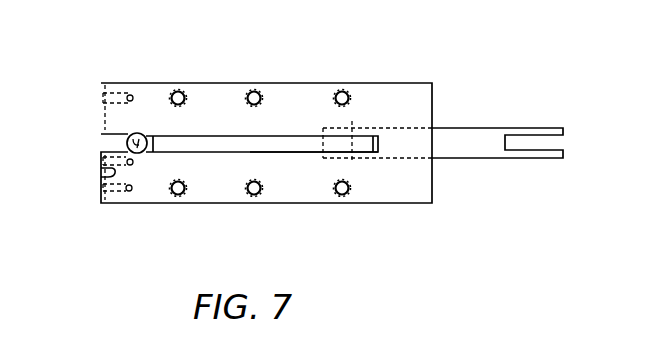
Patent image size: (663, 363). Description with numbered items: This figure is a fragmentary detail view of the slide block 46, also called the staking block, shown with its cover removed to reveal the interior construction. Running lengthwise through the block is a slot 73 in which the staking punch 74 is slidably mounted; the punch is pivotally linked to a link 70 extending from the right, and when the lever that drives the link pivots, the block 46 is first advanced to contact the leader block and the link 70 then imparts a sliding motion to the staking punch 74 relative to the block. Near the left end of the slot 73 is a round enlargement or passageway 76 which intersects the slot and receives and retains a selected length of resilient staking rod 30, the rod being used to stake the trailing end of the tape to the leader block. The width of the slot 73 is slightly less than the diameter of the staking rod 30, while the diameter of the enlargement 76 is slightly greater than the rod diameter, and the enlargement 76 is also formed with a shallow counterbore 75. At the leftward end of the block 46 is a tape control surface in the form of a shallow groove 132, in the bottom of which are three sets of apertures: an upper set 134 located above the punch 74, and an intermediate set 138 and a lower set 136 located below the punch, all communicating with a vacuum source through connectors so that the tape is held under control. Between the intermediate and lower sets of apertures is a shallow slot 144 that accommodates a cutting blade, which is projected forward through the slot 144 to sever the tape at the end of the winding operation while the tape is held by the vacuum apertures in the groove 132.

The slide block 46 is at (433, 93).
The link 70 is at (473, 128).
The slot 73 is at (267, 137).
The staking punch 74 is at (277, 148).
The shallow counterbore 75 is at (138, 132).
The enlargement 76 is at (145, 136).
The staking rod 30 is at (139, 153).
The upper set of apertures 134 is at (113, 98).
The shallow groove 132 is at (109, 115).
The intermediate set of apertures 138 is at (115, 160).
The shallow slot 144 is at (104, 176).
The lower set of apertures 136 is at (114, 192).